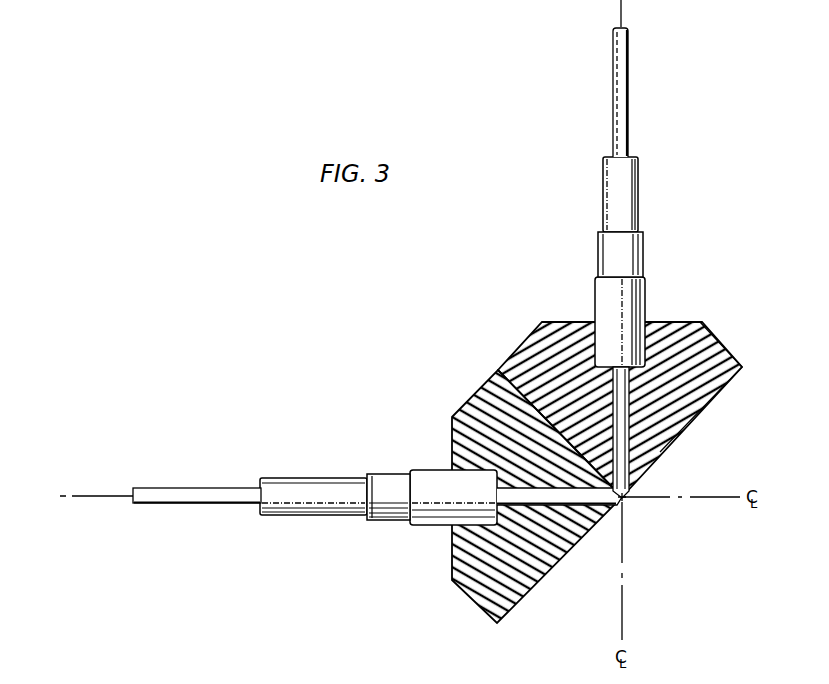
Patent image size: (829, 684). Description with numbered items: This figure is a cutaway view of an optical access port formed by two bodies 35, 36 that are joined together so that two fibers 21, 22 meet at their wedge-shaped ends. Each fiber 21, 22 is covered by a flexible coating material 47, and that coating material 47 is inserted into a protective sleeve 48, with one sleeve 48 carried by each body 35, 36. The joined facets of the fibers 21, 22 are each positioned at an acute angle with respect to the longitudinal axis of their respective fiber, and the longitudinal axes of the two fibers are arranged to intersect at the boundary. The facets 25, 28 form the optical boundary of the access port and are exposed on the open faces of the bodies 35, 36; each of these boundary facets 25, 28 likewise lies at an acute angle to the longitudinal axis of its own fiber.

The fiber 21 is at (190, 498).
The fiber 22 is at (622, 104).
The facet 25 is at (625, 500).
The facet 28 is at (628, 494).
The body 35 is at (478, 398).
The body 36 is at (531, 347).
The flexible coating material 47 is at (312, 485).
The protective sleeve 48 is at (427, 482).